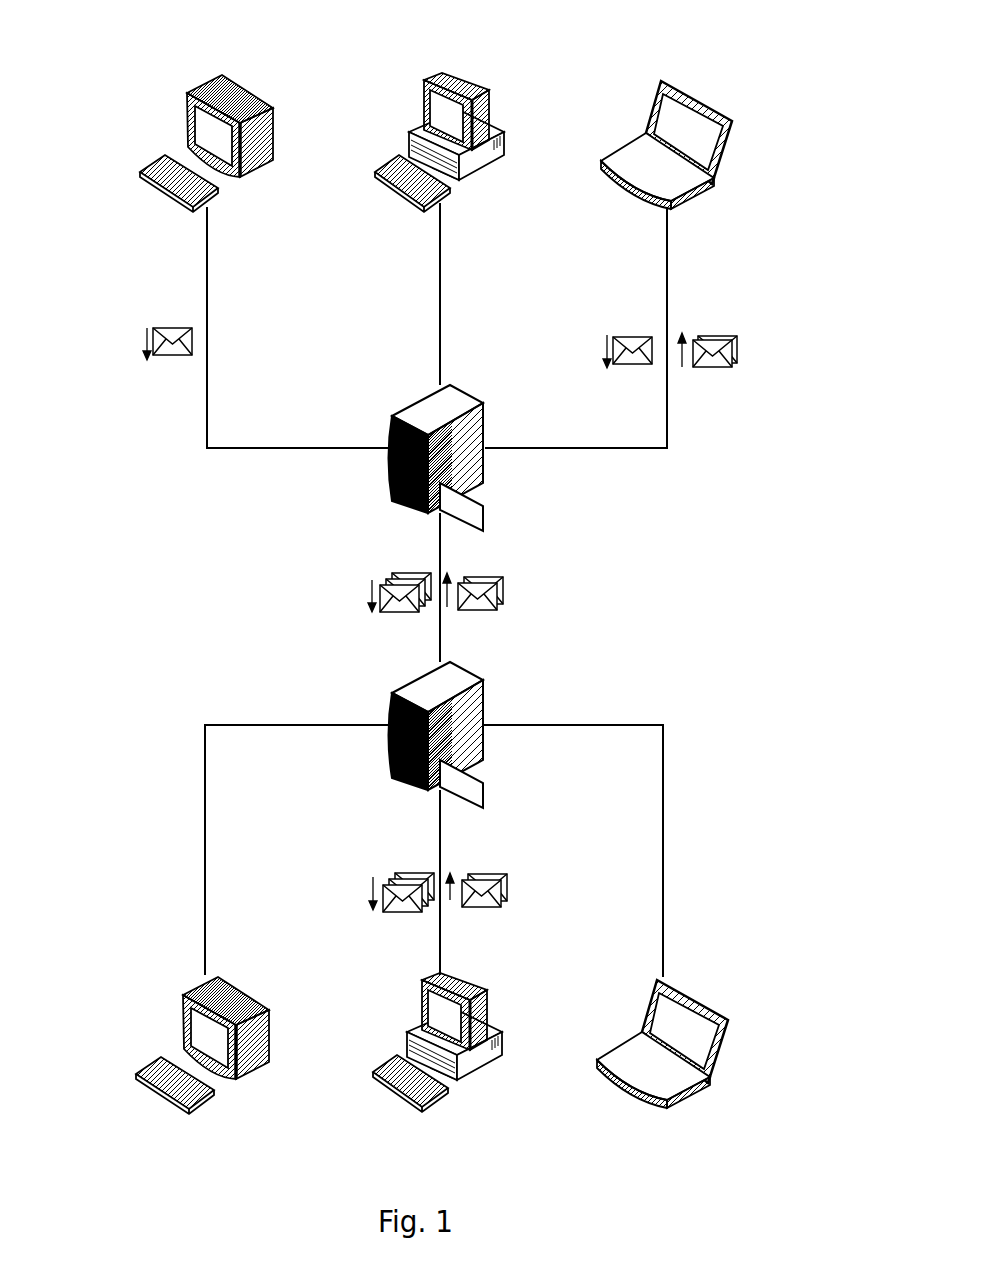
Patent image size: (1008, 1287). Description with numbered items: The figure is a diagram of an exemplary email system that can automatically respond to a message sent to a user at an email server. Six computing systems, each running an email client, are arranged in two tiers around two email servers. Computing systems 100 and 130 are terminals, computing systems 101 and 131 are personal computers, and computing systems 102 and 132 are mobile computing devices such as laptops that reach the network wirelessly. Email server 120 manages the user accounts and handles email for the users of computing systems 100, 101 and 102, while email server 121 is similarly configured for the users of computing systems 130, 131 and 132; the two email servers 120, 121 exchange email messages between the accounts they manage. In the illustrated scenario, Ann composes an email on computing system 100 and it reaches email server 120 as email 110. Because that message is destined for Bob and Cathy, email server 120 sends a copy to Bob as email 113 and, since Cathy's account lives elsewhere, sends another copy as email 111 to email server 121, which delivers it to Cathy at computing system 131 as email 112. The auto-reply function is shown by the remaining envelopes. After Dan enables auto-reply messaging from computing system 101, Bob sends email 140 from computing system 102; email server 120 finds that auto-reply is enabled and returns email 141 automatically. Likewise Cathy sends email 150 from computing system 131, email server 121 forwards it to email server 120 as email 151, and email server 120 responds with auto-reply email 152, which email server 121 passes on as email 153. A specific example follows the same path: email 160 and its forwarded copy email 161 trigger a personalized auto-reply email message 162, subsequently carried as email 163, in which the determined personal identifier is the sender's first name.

The computing system 100 is at (267, 63).
The computing system 101 is at (463, 63).
The computing system 102 is at (677, 63).
The email 110 is at (133, 320).
The email 111 is at (363, 580).
The email 112 is at (367, 870).
The email 113 is at (740, 322).
The email server 120 is at (477, 385).
The email server 121 is at (475, 660).
The computing system 130 is at (243, 1093).
The computing system 131 is at (473, 1095).
The computing system 132 is at (703, 1105).
The email 140 is at (593, 330).
The email 141 is at (758, 329).
The email 150 is at (508, 860).
The email 151 is at (505, 563).
The email 152 is at (353, 568).
The email 153 is at (359, 864).
The email 160 is at (527, 869).
The email 161 is at (524, 570).
The personalized auto-reply email message 162 is at (350, 586).
The personalized auto-reply email message 163 is at (356, 882).